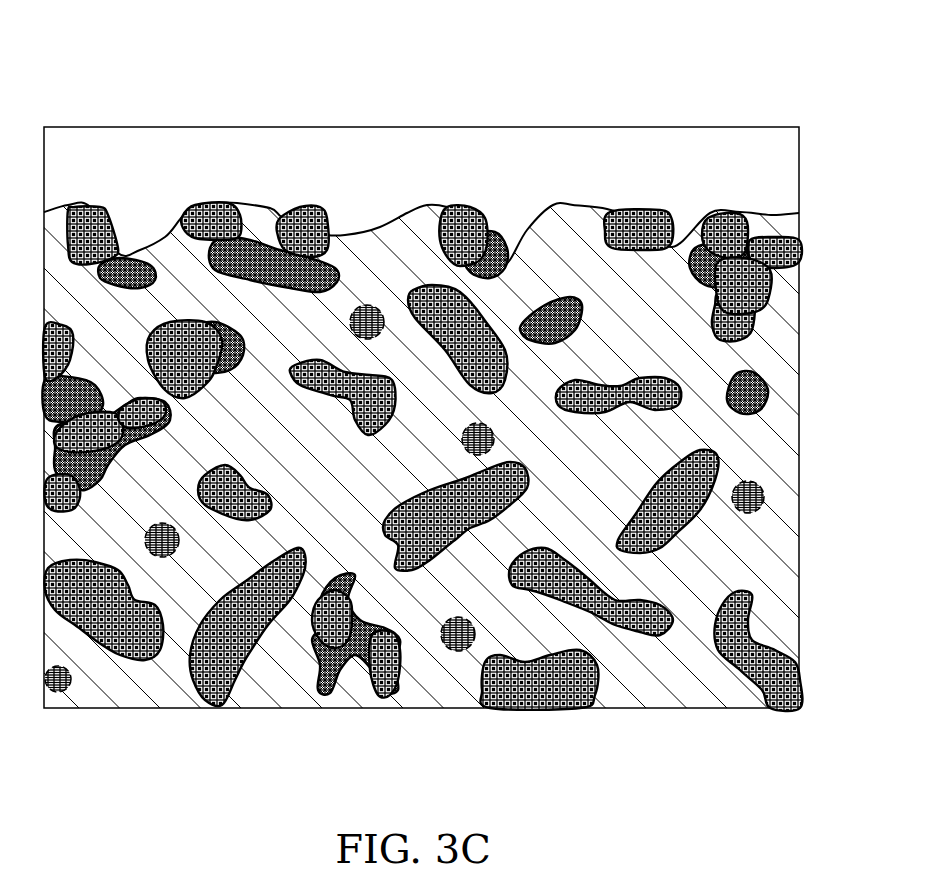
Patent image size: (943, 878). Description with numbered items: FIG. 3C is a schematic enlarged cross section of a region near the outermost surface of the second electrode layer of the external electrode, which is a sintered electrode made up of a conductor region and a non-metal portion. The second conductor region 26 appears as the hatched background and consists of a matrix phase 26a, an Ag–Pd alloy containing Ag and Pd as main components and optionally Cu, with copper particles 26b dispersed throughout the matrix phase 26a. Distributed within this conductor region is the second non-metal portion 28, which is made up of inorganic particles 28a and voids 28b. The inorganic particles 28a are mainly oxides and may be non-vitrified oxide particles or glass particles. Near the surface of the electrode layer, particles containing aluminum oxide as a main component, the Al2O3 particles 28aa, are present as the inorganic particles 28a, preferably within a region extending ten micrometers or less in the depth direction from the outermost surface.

The second conductor region 26 is at (471, 472).
The matrix phase 26a is at (405, 695).
The copper particles 26b is at (453, 652).
The second non-metal portion 28 is at (422, 420).
The inorganic particles 28a is at (730, 320).
The Al2O3 particles 28aa is at (730, 388).
The voids 28b is at (767, 263).